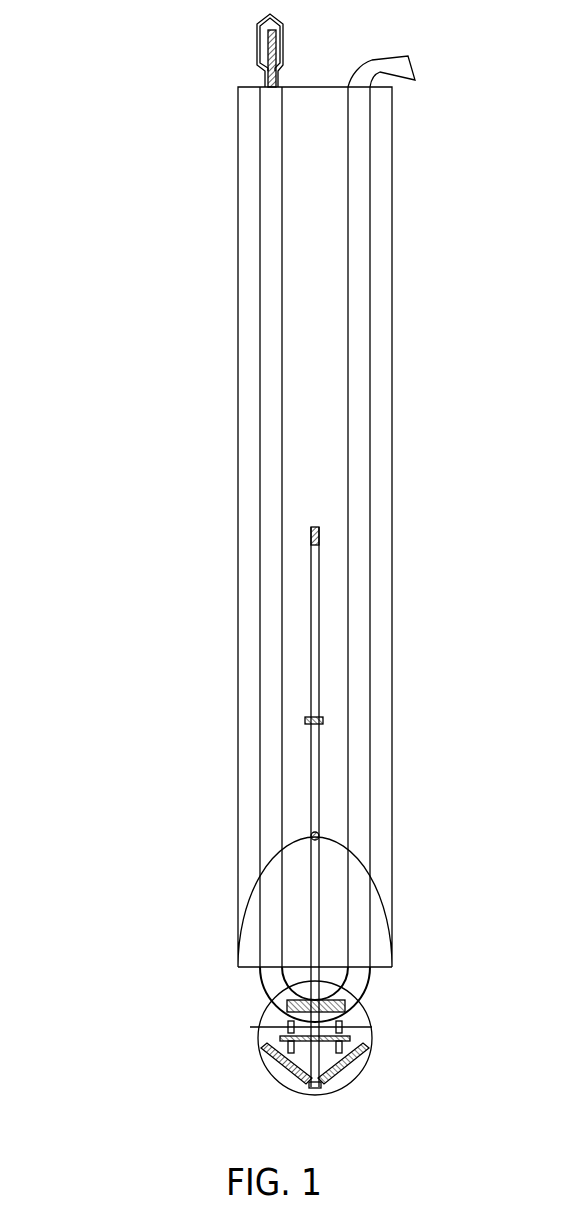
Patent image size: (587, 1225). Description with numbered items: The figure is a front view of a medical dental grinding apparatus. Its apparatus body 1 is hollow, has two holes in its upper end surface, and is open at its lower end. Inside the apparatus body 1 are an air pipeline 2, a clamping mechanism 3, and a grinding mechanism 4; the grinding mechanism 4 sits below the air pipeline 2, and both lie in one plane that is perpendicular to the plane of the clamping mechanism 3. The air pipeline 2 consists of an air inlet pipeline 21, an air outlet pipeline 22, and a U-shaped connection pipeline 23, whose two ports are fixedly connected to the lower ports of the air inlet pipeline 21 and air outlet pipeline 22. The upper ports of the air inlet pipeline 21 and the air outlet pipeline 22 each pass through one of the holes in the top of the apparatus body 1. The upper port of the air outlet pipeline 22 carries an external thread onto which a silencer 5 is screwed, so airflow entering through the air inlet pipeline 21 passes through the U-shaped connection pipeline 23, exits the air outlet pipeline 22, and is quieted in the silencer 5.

The apparatus body 1 is at (391, 500).
The air pipeline 2 is at (80, 318).
The air inlet pipeline 21 is at (357, 322).
The air outlet pipeline 22 is at (271, 775).
The U-shaped connection pipeline 23 is at (277, 986).
The clamping mechanism 3 is at (314, 811).
The grinding mechanism 4 is at (347, 1077).
The silencer 5 is at (272, 51).